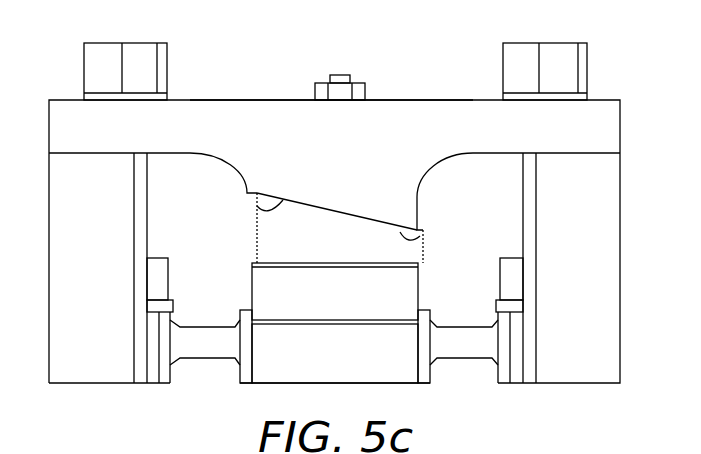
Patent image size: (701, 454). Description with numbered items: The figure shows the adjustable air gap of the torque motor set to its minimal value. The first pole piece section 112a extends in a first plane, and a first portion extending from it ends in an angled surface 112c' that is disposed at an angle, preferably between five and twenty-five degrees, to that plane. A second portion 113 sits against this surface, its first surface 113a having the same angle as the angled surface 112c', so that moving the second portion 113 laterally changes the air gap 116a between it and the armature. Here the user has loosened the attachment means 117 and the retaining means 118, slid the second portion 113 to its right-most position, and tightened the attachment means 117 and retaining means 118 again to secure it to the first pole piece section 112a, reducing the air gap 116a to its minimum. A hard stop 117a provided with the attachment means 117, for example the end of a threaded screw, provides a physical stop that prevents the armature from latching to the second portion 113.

The attachment means 117 is at (340, 75).
The retaining means 118 is at (315, 88).
The first pole piece section 112a is at (432, 100).
The angled surface 112c' is at (337, 196).
The first surface 113a is at (257, 208).
The second portion 113 is at (262, 250).
The hard stop 117a is at (343, 267).
The air gap 116a is at (420, 264).